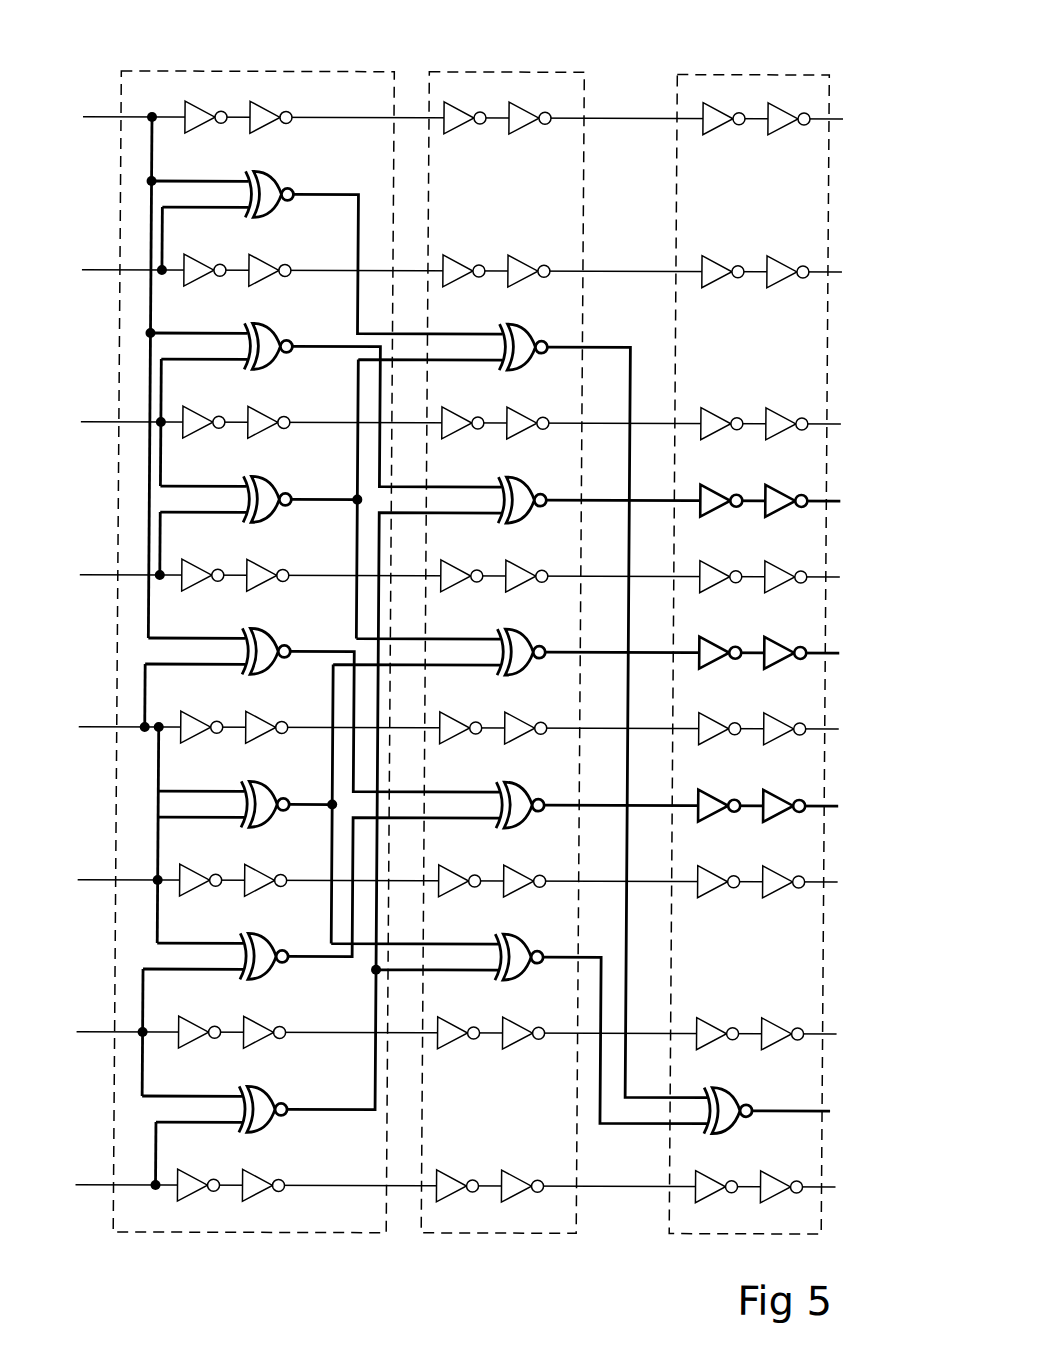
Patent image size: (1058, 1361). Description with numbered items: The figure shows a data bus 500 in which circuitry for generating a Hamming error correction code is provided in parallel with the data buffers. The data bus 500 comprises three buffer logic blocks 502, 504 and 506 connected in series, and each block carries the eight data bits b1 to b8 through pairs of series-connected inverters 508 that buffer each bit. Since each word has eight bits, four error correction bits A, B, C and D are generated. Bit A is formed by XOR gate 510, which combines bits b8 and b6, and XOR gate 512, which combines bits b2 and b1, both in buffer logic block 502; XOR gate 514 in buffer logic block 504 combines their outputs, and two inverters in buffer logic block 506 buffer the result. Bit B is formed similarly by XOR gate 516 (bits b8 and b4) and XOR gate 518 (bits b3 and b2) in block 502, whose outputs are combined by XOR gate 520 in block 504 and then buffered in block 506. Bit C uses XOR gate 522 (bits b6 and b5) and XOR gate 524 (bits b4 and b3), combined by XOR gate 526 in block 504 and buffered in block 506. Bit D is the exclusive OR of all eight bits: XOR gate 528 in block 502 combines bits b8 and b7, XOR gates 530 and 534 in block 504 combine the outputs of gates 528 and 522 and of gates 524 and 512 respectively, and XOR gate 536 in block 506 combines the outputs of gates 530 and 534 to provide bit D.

The data bus 500 is at (484, 620).
The buffer logic block 502 is at (343, 71).
The buffer logic block 504 is at (510, 71).
The buffer logic block 506 is at (713, 73).
The inverters 508 is at (203, 101).
The XOR gate 510 is at (270, 337).
The XOR gate 512 is at (274, 1130).
The XOR gate 514 is at (528, 492).
The XOR gate 516 is at (270, 642).
The XOR gate 518 is at (268, 947).
The XOR gate 520 is at (523, 797).
The XOR gate 522 is at (270, 490).
The XOR gate 524 is at (268, 795).
The XOR gate 526 is at (523, 644).
The XOR gate 528 is at (272, 184).
The XOR gate 530 is at (528, 339).
The XOR gate 534 is at (526, 970).
The XOR gate 536 is at (737, 1097).